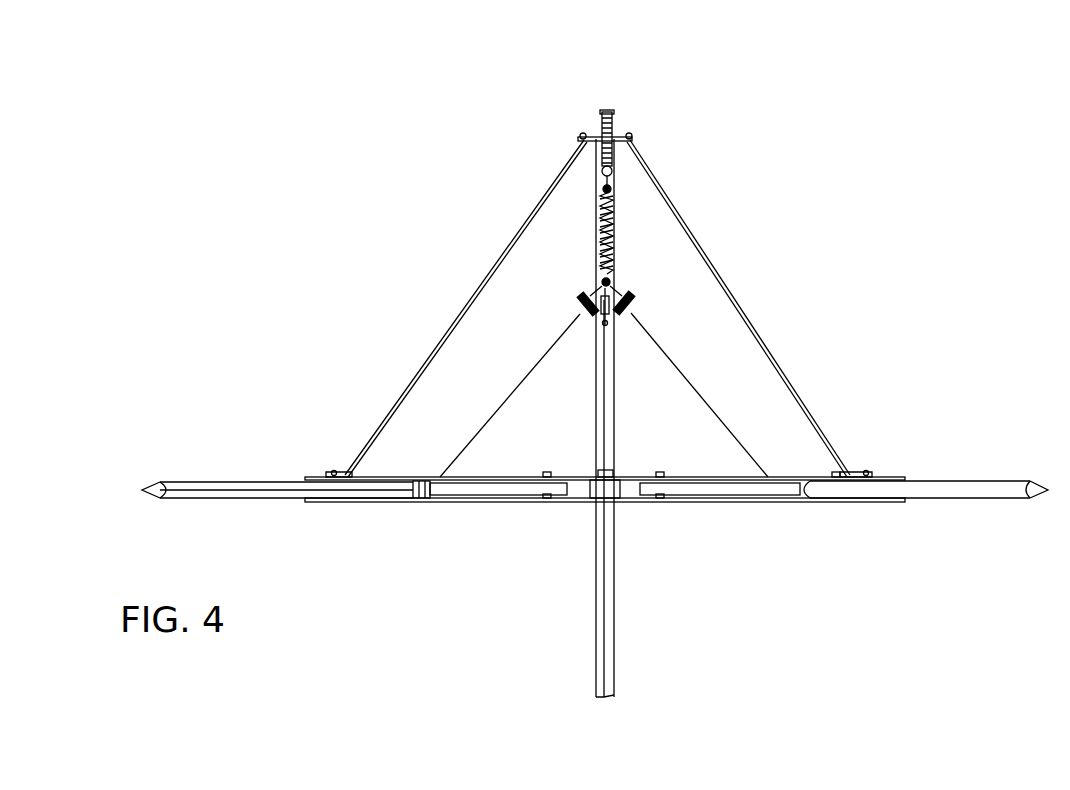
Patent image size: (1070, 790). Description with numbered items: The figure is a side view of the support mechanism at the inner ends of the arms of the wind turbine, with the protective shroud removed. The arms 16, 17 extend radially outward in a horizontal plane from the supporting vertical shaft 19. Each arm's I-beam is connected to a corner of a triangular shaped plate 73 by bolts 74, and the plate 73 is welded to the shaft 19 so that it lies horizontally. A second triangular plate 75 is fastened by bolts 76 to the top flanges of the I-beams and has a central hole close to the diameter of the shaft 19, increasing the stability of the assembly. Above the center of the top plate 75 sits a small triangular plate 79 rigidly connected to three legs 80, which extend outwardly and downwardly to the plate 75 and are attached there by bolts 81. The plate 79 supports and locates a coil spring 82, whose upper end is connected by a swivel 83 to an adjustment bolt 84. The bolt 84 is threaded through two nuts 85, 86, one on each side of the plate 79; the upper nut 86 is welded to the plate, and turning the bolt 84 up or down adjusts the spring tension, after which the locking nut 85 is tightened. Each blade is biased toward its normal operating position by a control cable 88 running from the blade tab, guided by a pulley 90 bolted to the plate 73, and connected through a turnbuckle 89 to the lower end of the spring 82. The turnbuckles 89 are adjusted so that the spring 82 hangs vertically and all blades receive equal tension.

The arm 16 is at (198, 481).
The arm 17 is at (985, 480).
The vertical shaft 19 is at (604, 597).
The triangular shaped plate 73 is at (778, 502).
The bolts 74 is at (660, 503).
The second triangular plate 75 is at (712, 477).
The bolts 76 is at (660, 472).
The small triangular plate 79 is at (624, 138).
The legs 80 is at (690, 218).
The bolts 81 is at (335, 471).
The coil spring 82 is at (614, 232).
The swivel 83 is at (612, 172).
The adjustment bolt 84 is at (608, 111).
The nut 85 is at (581, 146).
The upper nut 86 is at (592, 138).
The control cable 88 is at (541, 362).
The turnbuckle 89 is at (632, 300).
The pulley 90 is at (432, 499).